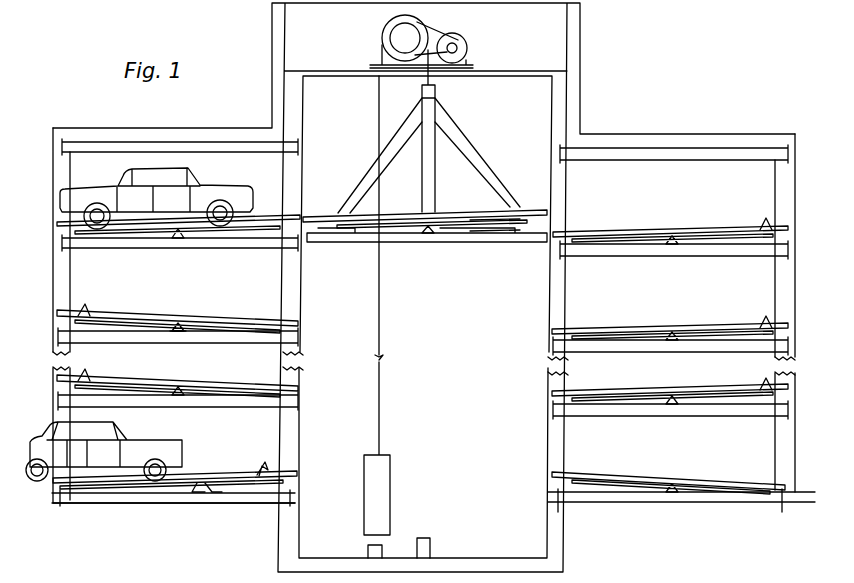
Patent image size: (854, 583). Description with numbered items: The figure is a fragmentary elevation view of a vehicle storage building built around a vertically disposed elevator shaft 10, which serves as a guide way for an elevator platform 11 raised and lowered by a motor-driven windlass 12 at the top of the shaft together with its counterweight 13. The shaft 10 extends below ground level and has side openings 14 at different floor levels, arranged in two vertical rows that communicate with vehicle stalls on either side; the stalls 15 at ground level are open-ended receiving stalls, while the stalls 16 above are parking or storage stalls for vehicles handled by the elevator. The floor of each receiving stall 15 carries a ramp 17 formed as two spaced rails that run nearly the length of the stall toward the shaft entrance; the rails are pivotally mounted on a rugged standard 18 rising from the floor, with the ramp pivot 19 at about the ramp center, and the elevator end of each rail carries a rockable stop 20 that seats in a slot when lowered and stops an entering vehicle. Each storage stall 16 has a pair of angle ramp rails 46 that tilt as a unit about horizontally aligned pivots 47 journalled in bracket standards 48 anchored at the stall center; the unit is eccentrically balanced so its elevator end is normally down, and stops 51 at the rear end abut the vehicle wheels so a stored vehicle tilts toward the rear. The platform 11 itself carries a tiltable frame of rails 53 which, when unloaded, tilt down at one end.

The elevator shaft 10 is at (424, 287).
The elevator platform 11 is at (405, 247).
The motor-driven windlass 12 is at (420, 27).
The counterweight 13 is at (370, 470).
The side openings 14 is at (298, 182).
The receiving stalls 15 is at (252, 433).
The storage stalls 16 is at (423, 279).
The ramp 17 is at (197, 482).
The standard 18 is at (220, 491).
The ramp pivot 19 is at (200, 491).
The rockable stop 20 is at (265, 456).
The angle ramp rails 46 is at (98, 228).
The pivots 47 is at (182, 326).
The bracket standards 48 is at (178, 331).
The stops 51 is at (84, 311).
The rails 53 is at (482, 222).